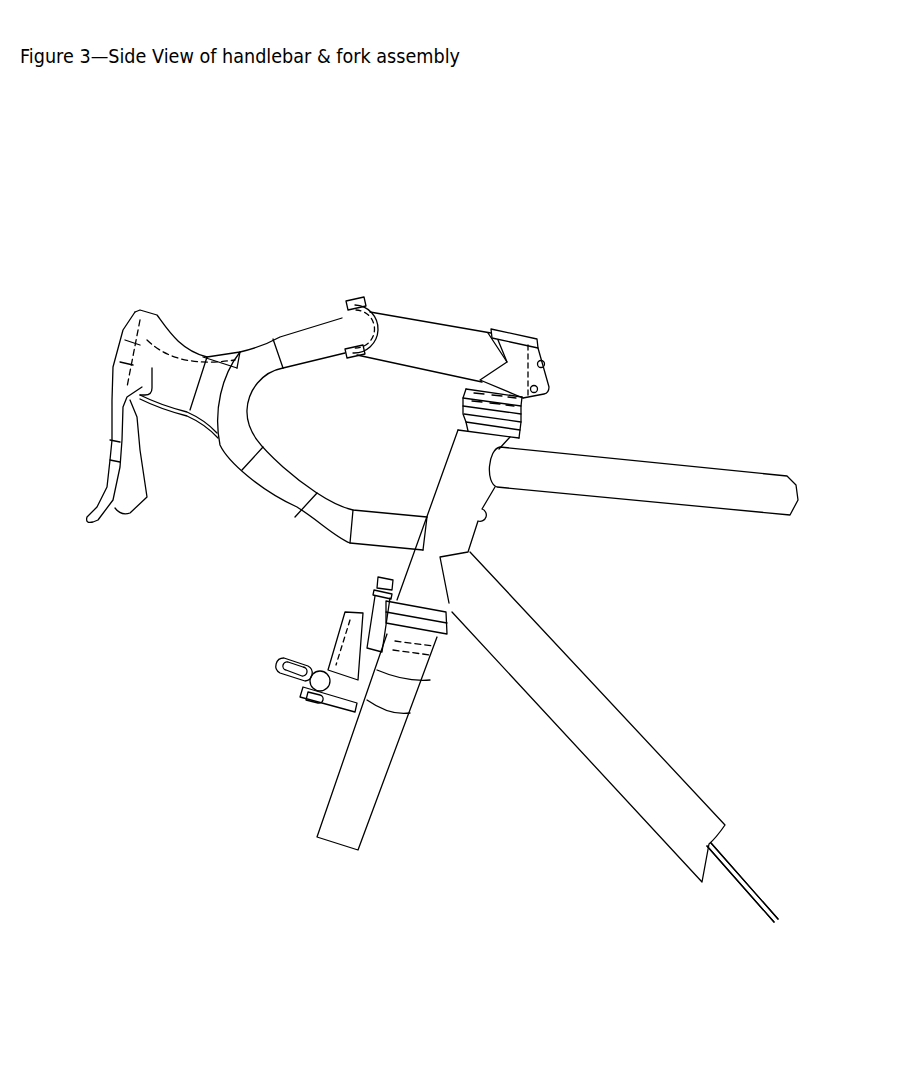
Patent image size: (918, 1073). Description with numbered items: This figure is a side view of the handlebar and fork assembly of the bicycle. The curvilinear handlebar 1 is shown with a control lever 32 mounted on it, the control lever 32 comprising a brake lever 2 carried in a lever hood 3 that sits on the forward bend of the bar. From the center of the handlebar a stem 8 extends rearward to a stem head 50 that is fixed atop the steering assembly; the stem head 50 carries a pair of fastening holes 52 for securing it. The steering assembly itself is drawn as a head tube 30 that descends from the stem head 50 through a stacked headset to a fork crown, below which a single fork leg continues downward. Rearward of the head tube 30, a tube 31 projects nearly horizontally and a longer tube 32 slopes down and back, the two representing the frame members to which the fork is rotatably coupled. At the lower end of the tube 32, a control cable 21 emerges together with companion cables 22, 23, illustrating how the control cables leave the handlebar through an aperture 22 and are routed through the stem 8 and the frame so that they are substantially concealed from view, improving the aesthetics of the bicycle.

The handlebar 1 is at (300, 328).
The brake lever 2 is at (111, 385).
The brake lever hood 3 is at (135, 312).
The stem 8 is at (410, 315).
The second end 50 is at (515, 330).
The front brake 52 is at (553, 370).
The control cable 30 is at (430, 510).
The top tube 31 is at (737, 478).
The control lever 32 is at (620, 707).
The cable 21 is at (747, 880).
The aperture 22 is at (741, 865).
The cable wire 23 is at (770, 864).